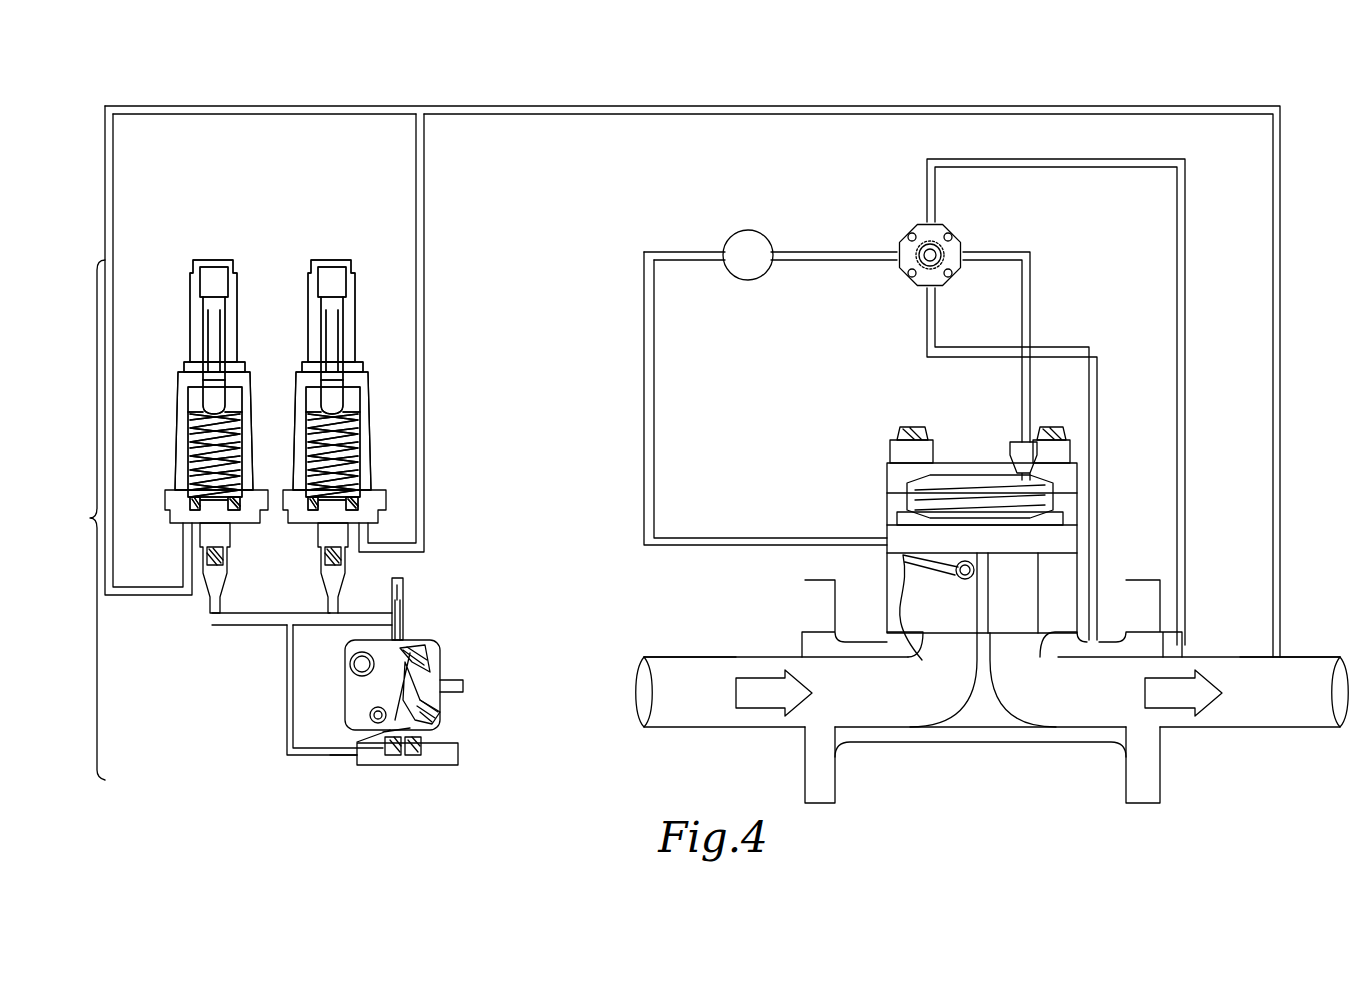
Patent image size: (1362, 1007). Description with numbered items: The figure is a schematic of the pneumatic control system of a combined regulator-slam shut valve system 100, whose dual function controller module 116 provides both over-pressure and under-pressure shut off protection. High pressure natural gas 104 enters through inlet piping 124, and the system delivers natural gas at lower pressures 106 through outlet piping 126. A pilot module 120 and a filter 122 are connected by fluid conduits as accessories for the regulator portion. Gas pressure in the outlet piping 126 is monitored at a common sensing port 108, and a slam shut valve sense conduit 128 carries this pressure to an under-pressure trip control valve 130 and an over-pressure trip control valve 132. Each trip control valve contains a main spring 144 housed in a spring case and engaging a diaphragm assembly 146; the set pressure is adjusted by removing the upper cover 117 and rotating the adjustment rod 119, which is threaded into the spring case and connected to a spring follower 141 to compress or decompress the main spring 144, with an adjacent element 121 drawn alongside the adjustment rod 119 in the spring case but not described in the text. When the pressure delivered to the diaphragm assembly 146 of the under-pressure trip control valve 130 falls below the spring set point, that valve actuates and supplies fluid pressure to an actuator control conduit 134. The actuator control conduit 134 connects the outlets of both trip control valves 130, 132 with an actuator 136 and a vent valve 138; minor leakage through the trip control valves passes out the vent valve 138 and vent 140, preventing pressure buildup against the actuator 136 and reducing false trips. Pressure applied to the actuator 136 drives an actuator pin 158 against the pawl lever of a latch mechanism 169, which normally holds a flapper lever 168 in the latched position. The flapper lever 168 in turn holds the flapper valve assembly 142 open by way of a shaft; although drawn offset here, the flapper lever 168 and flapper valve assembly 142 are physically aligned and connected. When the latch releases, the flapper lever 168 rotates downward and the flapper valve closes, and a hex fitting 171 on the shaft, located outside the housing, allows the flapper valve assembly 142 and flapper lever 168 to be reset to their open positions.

The combined regulator-slam shut valve system 100 is at (695, 76).
The high pressure natural gas 104 is at (774, 693).
The lower pressure natural gas 106 is at (1183, 693).
The sensing port 108 is at (1290, 655).
The controller module 116 is at (82, 520).
The upper cover 117 is at (205, 260).
The adjustment rod 119 is at (201, 320).
The pilot module 120 is at (945, 238).
The stem 121 is at (190, 356).
The filter 122 is at (748, 230).
The inlet piping 124 is at (712, 728).
The outlet piping 126 is at (1222, 728).
The slam shut valve sense conduit 128 is at (490, 106).
The under-pressure trip control valve 130 is at (238, 252).
The over-pressure trip control valve 132 is at (310, 252).
The actuator control conduit 134 is at (285, 652).
The actuator 136 is at (527, 732).
The vent valve 138 is at (405, 615).
The vent 140 is at (457, 683).
The spring follower 141 is at (190, 410).
The flapper valve assembly 142 is at (912, 567).
The main spring 144 is at (190, 450).
The diaphragm assembly 146 is at (190, 504).
The actuator pin 158 is at (355, 752).
The flapper lever 168 is at (397, 665).
The latch mechanism 169 is at (527, 730).
The hex fitting 171 is at (352, 668).